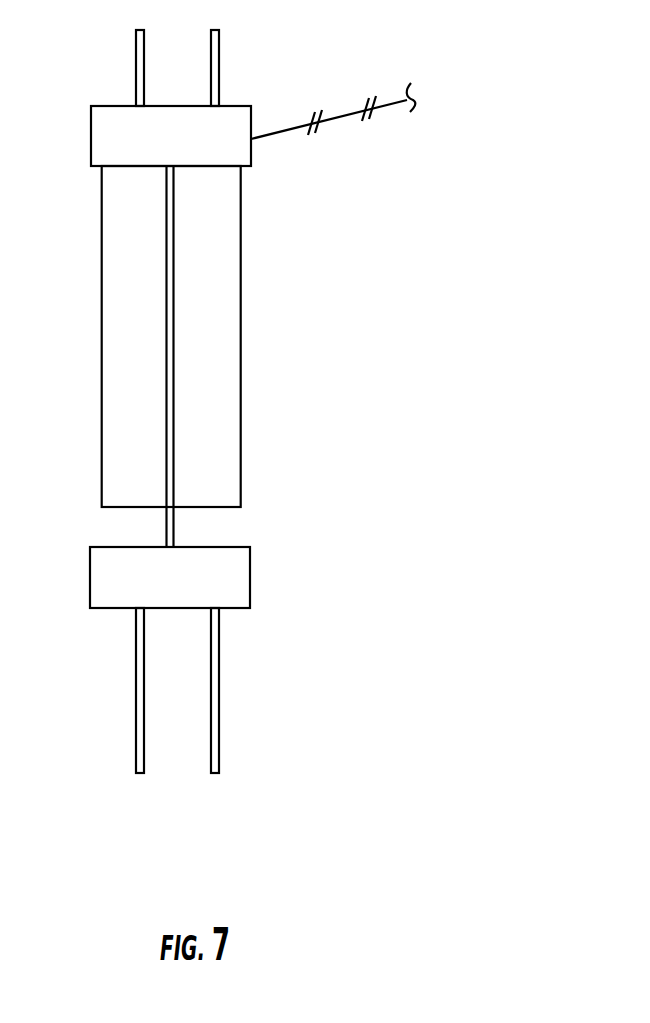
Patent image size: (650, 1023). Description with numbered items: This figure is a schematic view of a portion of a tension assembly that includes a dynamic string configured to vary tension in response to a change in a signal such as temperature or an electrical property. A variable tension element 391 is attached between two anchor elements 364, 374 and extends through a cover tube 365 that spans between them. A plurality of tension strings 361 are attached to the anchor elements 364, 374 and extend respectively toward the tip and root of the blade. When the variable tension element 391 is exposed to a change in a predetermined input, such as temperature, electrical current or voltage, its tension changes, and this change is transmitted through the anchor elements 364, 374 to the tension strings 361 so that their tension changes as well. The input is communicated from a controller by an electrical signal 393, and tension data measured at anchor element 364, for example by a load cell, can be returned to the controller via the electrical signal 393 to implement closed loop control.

The tension strings 361 is at (140, 75).
The anchor element 364 is at (90, 135).
The cover tube 365 is at (242, 268).
The anchor element 374 is at (90, 580).
The variable tension element 391 is at (168, 333).
The electrical signal 393 is at (347, 113).